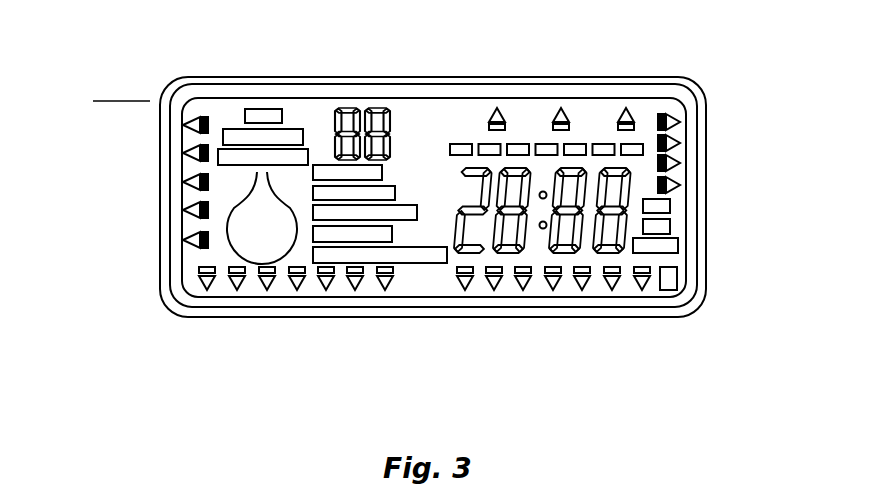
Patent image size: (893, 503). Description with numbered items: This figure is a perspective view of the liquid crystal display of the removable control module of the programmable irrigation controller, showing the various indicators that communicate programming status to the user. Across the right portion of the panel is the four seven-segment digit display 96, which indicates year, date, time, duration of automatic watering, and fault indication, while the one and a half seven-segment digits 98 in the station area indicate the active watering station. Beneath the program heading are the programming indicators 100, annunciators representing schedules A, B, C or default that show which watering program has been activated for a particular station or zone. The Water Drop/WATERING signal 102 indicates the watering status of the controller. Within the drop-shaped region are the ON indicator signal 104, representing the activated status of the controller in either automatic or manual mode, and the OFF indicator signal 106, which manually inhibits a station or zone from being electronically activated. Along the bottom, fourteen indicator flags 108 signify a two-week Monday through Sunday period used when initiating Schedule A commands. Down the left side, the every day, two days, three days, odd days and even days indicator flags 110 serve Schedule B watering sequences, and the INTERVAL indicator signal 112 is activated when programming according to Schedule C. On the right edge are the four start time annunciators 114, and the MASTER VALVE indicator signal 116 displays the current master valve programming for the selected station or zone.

The four "7" segment digit display 96 is at (635, 197).
The one and a half "7" segment digits 98 is at (388, 124).
The programming indicators 100 is at (228, 130).
The Water Drop/WATERING signal 102 is at (300, 163).
The ON indicator signal 104 is at (257, 220).
The OFF indicator signal 106 is at (260, 250).
The fourteen indicator flags 108 is at (330, 338).
The EVERY DAY, 2 DAYS, 3 DAYS, ODD DAYS and EVEN DAYS indicator flags 110 is at (83, 110).
The INTERVAL indicator signal 112 is at (397, 190).
The start time annunciators 114 is at (759, 97).
The MASTER VALVE indicator signal 116 is at (428, 265).